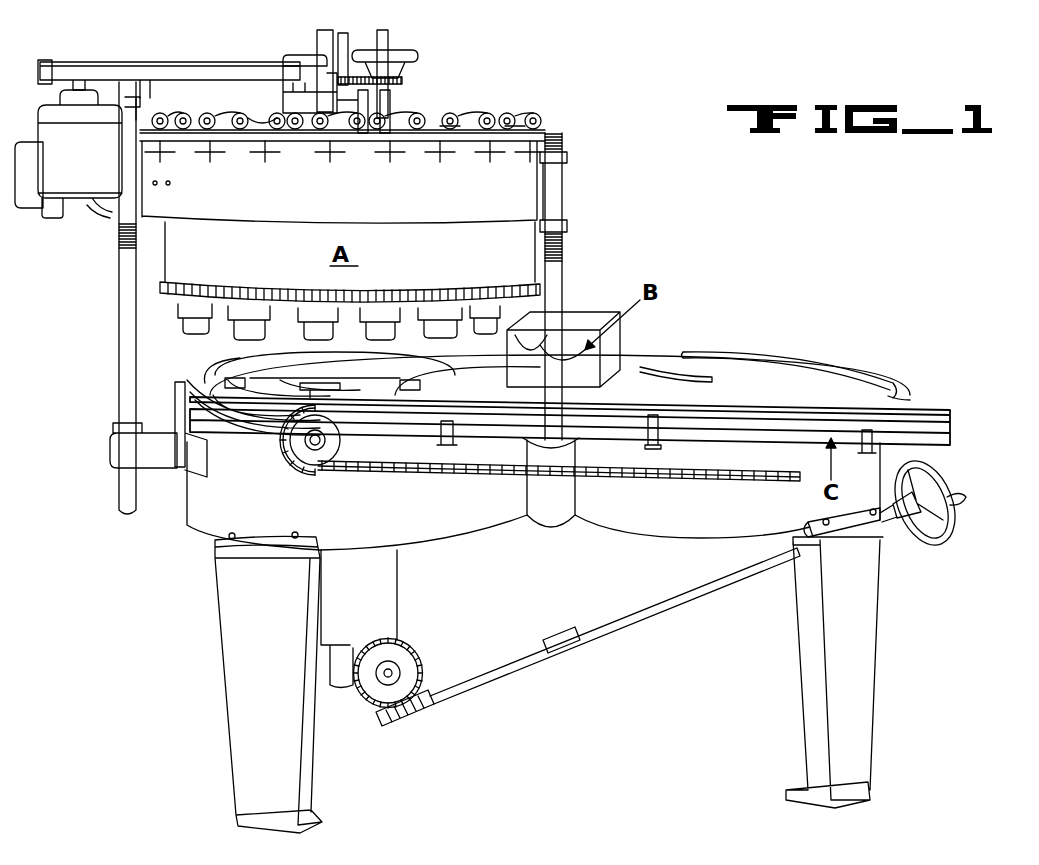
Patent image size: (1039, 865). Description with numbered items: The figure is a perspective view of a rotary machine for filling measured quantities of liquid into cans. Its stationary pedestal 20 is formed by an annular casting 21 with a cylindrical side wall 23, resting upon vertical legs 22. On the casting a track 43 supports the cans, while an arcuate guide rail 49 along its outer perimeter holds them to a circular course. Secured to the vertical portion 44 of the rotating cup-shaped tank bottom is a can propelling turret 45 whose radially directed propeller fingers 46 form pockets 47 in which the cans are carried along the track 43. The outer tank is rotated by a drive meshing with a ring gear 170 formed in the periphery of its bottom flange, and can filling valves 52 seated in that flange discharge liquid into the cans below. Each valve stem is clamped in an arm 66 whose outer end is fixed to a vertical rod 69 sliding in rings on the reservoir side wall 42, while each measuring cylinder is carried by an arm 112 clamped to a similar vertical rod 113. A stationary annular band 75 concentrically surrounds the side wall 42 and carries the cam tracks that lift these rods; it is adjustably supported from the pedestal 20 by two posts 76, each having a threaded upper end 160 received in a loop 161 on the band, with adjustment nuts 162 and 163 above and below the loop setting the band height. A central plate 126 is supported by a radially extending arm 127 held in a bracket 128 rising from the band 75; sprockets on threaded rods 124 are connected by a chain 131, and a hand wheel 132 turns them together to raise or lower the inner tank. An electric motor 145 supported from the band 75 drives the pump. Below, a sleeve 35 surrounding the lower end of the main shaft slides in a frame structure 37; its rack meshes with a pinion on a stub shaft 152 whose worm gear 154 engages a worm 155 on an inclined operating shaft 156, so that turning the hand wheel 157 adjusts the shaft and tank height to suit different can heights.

The radially extending arm 127 is at (185, 78).
The rods 124 is at (388, 38).
The hand wheel 132 is at (416, 57).
The chain 131 is at (403, 80).
The bracket 128 is at (142, 104).
The arm 66 is at (200, 118).
The plate 126 is at (350, 97).
The arm 112 is at (452, 118).
The electric motor 145 is at (105, 162).
The vertical rod 113 is at (218, 160).
The rod 69 is at (247, 160).
The stationary annular band 75 is at (392, 200).
The adjustment nut 162 is at (567, 157).
The loop 161 is at (555, 192).
The adjustment nut 163 is at (563, 227).
The threaded upper end of post 160 is at (118, 255).
The side wall of reservoir 42 is at (282, 264).
The ring gear 170 is at (378, 292).
The posts 76 is at (118, 290).
The can filling valves 52 is at (246, 328).
The propeller fingers 46 is at (232, 376).
The can propelling turret 45 is at (285, 368).
The pockets 47 is at (332, 388).
The vertical portion of tank bottom 44 is at (372, 356).
The arcuate guide rail 49 is at (182, 380).
The track 43 is at (215, 410).
The cylindrical side wall 23 is at (388, 503).
The annular casting 21 is at (485, 512).
The stationary pedestal 20 is at (194, 527).
The vertical legs 22 is at (275, 622).
The frame structure 37 is at (372, 600).
The worm gear 154 is at (402, 655).
The stub shaft 152 is at (400, 673).
The worm 155 is at (402, 722).
The sleeve 35 is at (345, 668).
The inclined operating shaft 156 is at (622, 624).
The hand wheel 157 is at (940, 540).